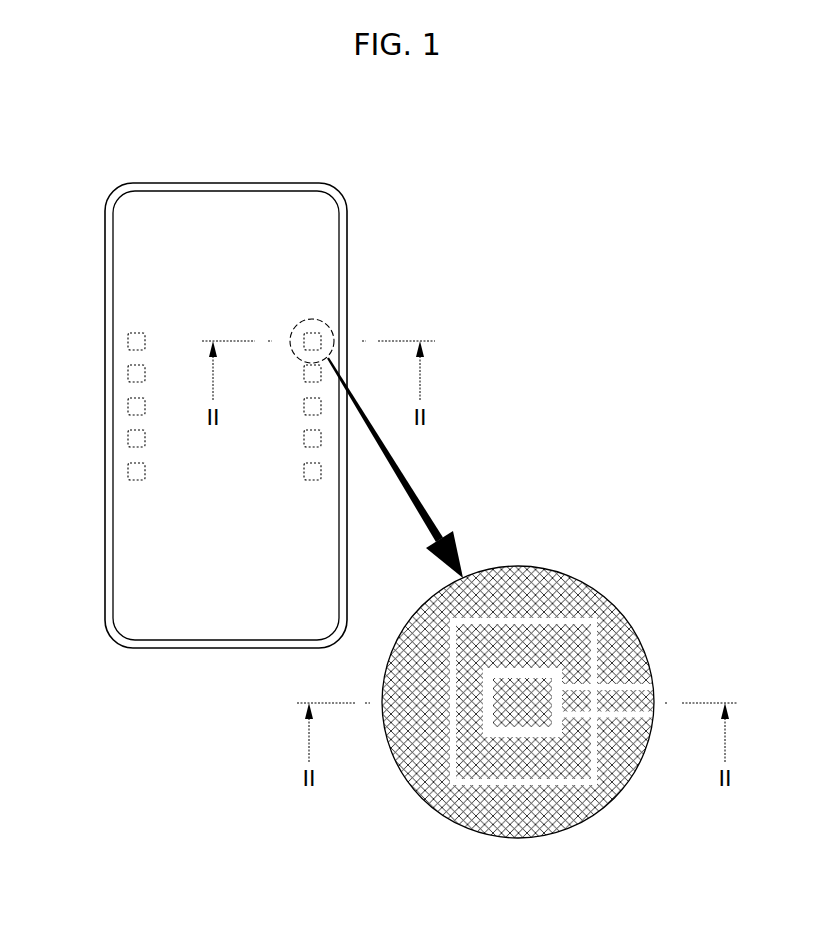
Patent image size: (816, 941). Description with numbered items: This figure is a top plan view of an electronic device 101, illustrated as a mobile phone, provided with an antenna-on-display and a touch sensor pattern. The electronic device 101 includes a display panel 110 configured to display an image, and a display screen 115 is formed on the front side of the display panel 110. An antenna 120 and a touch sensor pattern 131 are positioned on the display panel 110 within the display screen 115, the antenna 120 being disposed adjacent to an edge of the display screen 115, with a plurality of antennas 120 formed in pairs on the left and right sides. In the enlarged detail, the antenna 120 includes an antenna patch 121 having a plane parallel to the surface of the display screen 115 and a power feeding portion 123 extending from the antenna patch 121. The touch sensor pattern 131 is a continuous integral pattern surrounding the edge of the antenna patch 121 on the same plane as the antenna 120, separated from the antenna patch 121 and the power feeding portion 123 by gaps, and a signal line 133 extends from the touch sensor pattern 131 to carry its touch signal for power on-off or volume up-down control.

The electronic device 101 is at (360, 172).
The display panel 110 is at (105, 524).
The display screen 115 is at (187, 612).
The antenna 120 is at (574, 586).
The antenna patch 121 is at (530, 668).
The power feeding portion 123 is at (622, 683).
The touch sensor pattern 131 is at (445, 760).
The signal line 133 is at (604, 798).